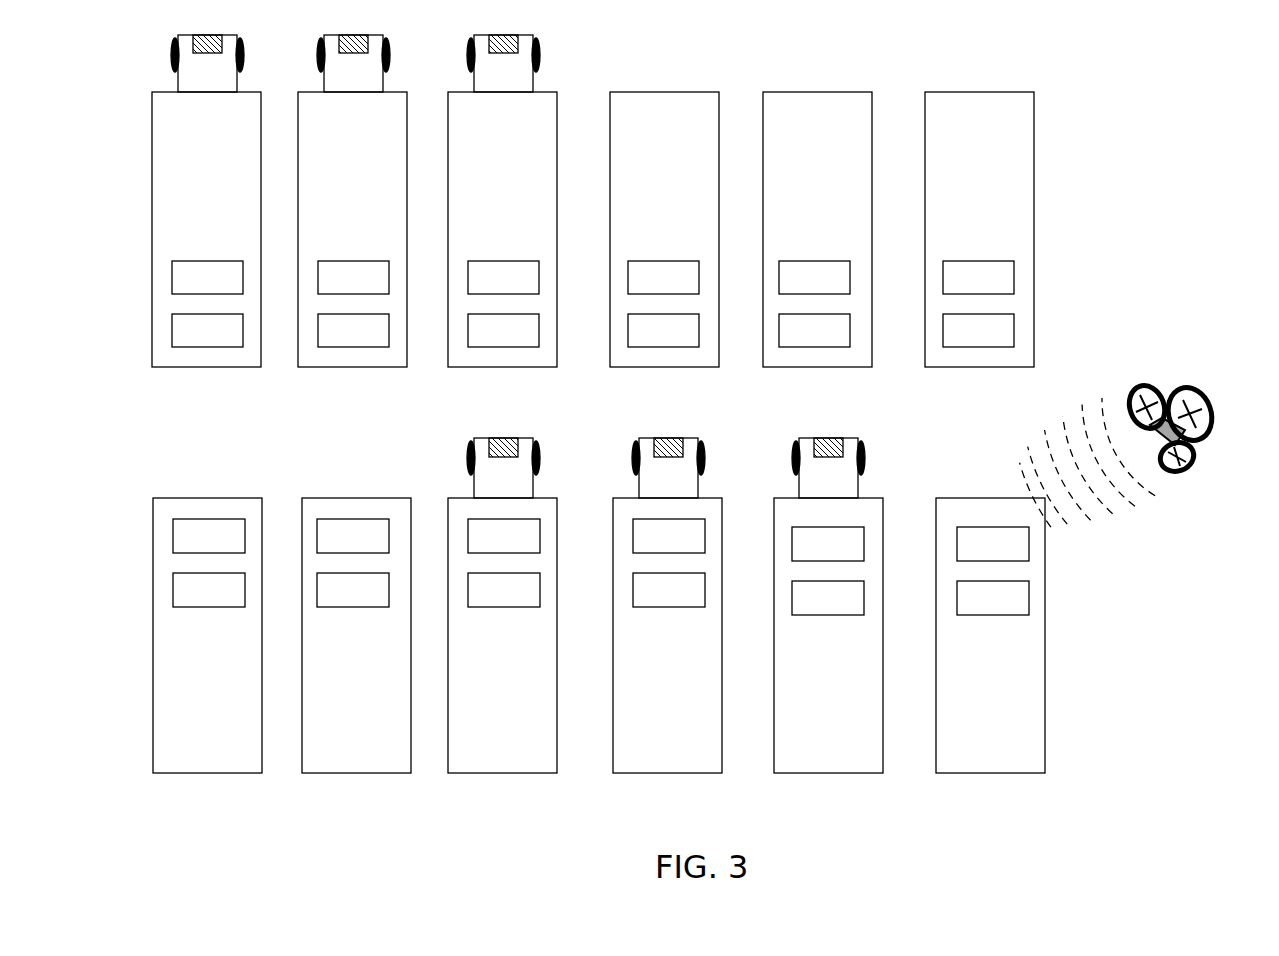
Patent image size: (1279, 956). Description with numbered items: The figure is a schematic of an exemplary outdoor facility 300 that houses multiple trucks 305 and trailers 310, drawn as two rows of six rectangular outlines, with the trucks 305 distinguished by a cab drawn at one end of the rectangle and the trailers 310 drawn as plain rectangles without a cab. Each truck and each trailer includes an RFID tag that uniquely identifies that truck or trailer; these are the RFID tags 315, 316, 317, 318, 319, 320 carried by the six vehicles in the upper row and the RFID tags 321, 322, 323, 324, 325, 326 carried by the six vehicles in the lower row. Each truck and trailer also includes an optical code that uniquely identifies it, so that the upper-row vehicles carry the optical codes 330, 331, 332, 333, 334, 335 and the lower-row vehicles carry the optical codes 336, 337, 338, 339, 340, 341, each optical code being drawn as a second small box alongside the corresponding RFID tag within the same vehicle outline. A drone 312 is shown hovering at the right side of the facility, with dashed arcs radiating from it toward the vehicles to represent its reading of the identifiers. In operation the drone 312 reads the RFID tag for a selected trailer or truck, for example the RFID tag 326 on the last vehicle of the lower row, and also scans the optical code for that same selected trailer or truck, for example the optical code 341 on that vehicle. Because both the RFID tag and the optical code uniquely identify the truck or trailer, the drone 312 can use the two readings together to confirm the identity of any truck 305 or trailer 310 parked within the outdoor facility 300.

The outdoor facility 300 is at (1102, 118).
The truck 305 is at (352, 367).
The trailer 310 is at (677, 92).
The drone 312 is at (1190, 487).
The RFID tag 315 is at (207, 330).
The RFID tag 316 is at (353, 330).
The RFID tag 317 is at (503, 330).
The RFID tag 318 is at (663, 330).
The RFID tag 319 is at (814, 330).
The RFID tag 320 is at (978, 330).
The RFID tag 321 is at (209, 536).
The RFID tag 322 is at (353, 536).
The RFID tag 323 is at (504, 536).
The RFID tag 324 is at (669, 536).
The RFID tag 325 is at (828, 544).
The RFID tag 326 is at (993, 544).
The optical code 330 is at (207, 277).
The optical code 331 is at (353, 277).
The optical code 332 is at (503, 277).
The optical code 333 is at (663, 277).
The optical code 334 is at (814, 277).
The optical code 335 is at (978, 277).
The optical code 336 is at (209, 590).
The optical code 337 is at (353, 590).
The optical code 338 is at (504, 590).
The optical code 339 is at (669, 590).
The optical code 340 is at (828, 598).
The optical code 341 is at (993, 598).